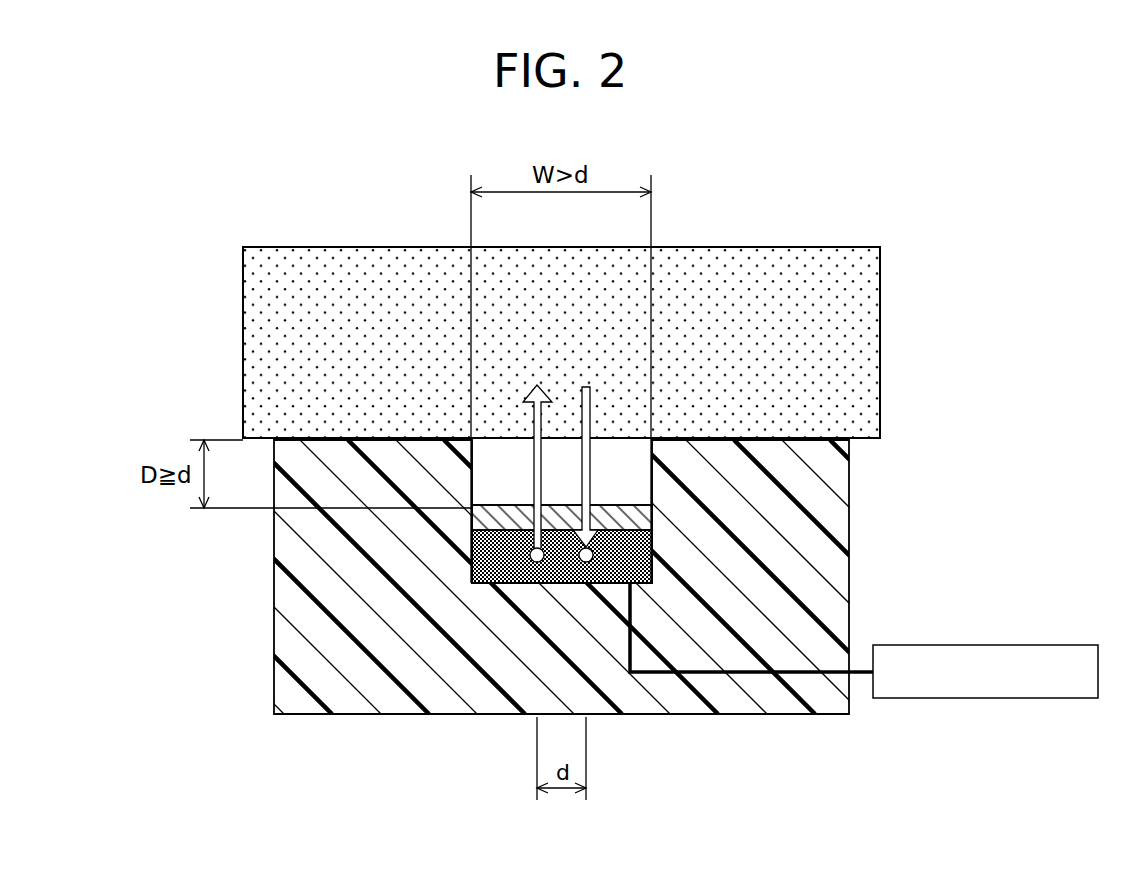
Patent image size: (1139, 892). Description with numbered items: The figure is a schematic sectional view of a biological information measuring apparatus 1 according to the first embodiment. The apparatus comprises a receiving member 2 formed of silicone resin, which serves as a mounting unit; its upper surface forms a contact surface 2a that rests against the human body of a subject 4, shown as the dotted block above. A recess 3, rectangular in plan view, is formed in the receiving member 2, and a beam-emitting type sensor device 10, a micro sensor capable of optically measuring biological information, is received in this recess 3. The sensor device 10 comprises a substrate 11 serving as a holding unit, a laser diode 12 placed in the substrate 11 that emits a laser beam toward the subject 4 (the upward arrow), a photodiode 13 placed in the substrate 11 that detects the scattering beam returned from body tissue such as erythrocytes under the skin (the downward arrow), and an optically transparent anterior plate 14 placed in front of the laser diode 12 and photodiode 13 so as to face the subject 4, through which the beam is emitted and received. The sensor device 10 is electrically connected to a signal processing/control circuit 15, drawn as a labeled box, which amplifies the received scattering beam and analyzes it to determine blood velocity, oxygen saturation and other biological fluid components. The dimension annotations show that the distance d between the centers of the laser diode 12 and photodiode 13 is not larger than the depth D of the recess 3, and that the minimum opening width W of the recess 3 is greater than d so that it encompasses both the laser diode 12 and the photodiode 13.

The biological information measuring apparatus 1 is at (569, 537).
The receiving member 2 is at (569, 553).
The contact surface 2a is at (810, 437).
The recess 3 is at (473, 503).
The subject 4 is at (868, 333).
The beam-emitting type sensor device 10 is at (563, 630).
The substrate 11 is at (471, 555).
The laser diode 12 is at (535, 563).
The photodiode 13 is at (589, 563).
The anterior plate 14 is at (645, 520).
The signal processing/control circuit 15 is at (977, 645).